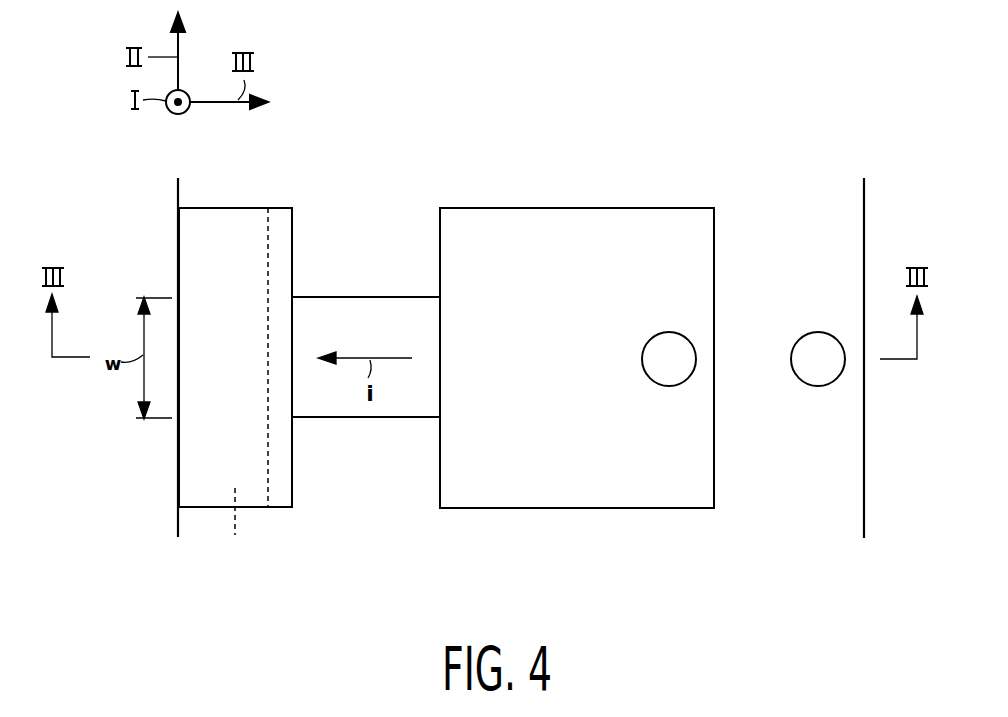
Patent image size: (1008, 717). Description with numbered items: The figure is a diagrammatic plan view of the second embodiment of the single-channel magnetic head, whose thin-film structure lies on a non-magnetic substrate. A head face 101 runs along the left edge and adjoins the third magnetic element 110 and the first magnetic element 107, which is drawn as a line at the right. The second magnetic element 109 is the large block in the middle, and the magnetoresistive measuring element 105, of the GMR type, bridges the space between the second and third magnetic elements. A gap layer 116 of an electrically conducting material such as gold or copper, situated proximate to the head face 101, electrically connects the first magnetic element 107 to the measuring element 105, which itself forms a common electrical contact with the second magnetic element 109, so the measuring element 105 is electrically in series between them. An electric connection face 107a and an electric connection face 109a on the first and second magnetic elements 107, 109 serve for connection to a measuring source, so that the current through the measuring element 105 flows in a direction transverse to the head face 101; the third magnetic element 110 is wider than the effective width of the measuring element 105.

The head face 101 is at (178, 466).
The magnetoresistive measuring element 105 is at (343, 312).
The first magnetic element 107 is at (778, 228).
The electric connection face 107a is at (820, 343).
The second magnetic element 109 is at (527, 226).
The electric connection face 109a is at (667, 343).
The third magnetic element 110 is at (222, 226).
The gap layer 116 is at (243, 385).